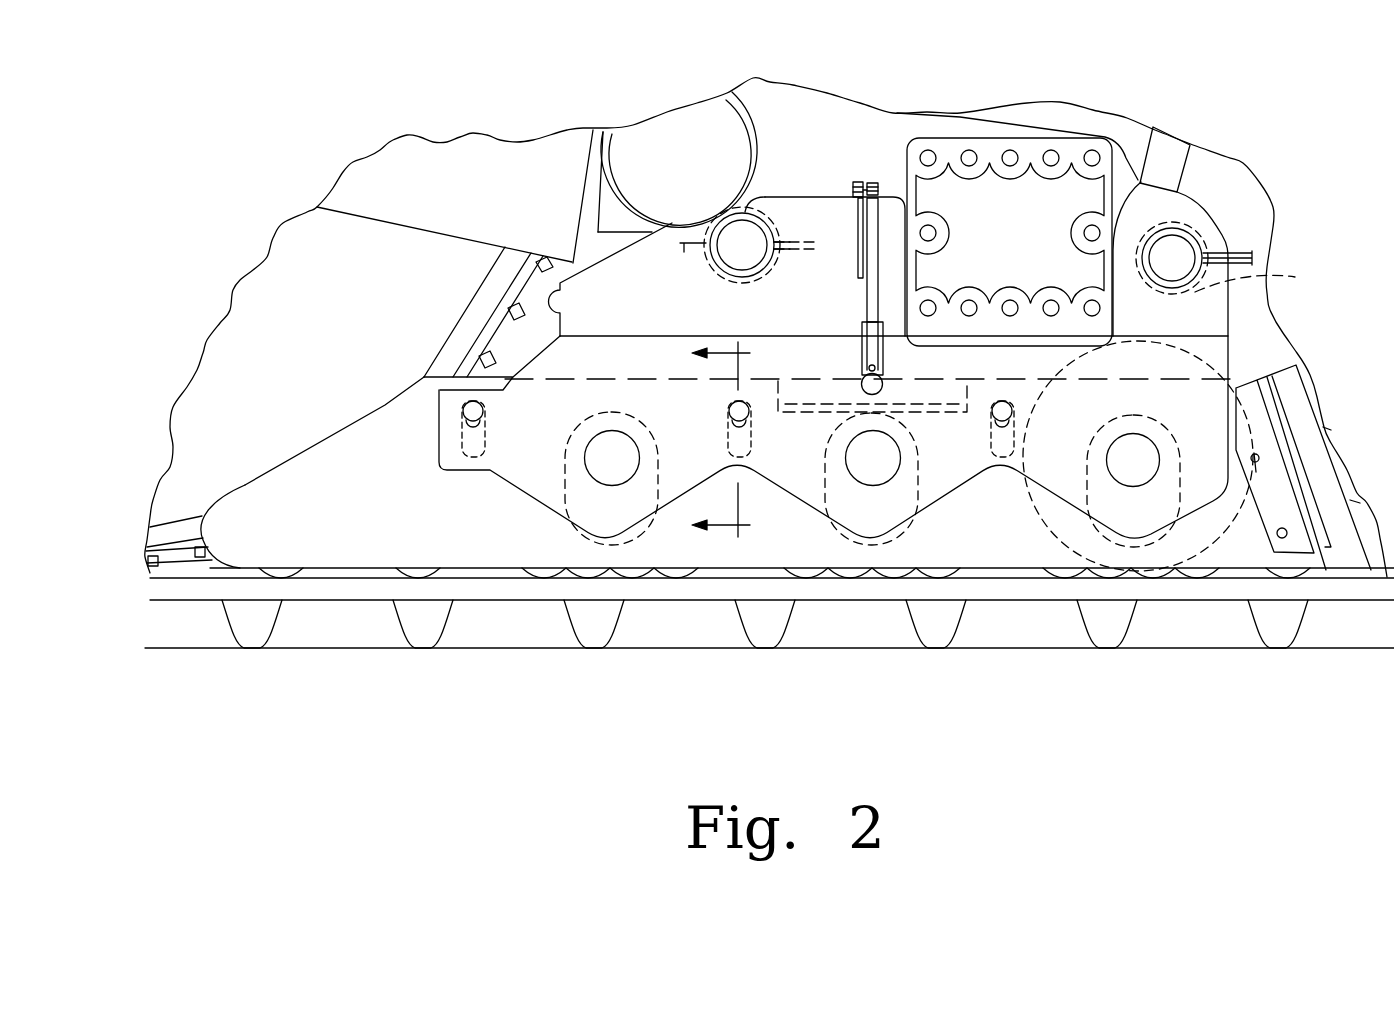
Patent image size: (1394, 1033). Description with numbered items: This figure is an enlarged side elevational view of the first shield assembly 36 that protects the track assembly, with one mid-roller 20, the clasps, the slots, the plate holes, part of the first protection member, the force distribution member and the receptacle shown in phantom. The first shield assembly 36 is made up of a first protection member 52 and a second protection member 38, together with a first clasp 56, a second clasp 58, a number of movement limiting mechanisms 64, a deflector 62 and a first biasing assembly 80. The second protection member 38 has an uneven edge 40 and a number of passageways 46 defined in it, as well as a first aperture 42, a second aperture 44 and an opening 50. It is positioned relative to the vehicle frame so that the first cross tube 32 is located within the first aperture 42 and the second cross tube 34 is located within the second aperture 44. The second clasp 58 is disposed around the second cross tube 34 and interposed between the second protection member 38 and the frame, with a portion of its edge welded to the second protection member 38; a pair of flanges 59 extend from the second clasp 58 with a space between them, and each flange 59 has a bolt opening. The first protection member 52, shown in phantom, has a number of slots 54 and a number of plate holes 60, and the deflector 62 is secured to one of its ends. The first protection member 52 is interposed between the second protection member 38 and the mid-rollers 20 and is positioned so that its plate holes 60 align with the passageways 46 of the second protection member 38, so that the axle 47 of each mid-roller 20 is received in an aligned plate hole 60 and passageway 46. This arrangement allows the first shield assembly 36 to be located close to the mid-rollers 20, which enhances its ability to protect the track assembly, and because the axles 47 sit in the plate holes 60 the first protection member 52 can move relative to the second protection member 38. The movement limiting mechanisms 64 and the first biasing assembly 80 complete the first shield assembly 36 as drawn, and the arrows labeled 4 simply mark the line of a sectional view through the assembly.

The mid-rollers 20 is at (1290, 355).
The first cross tube 32 is at (727, 218).
The second cross tube 34 is at (1143, 233).
The first shield assembly 36 is at (366, 398).
The second protection member 38 is at (830, 217).
The uneven edge 40 is at (520, 493).
The first aperture 42 is at (760, 230).
The second aperture 44 is at (1210, 242).
The passageways 46 is at (612, 482).
The axle 47 is at (1150, 458).
The opening 50 is at (884, 369).
The first protection member 52 is at (245, 496).
The slots 54 is at (473, 457).
The first clasp 56 is at (683, 255).
The second clasp 58 is at (1280, 280).
The flanges 59 is at (1247, 243).
The plate holes 60 is at (655, 493).
The deflector 62 is at (1318, 462).
The movement limiting mechanisms 64 is at (449, 394).
The first biasing assembly 80 is at (877, 168).
The section line 4- 4 is at (709, 441).